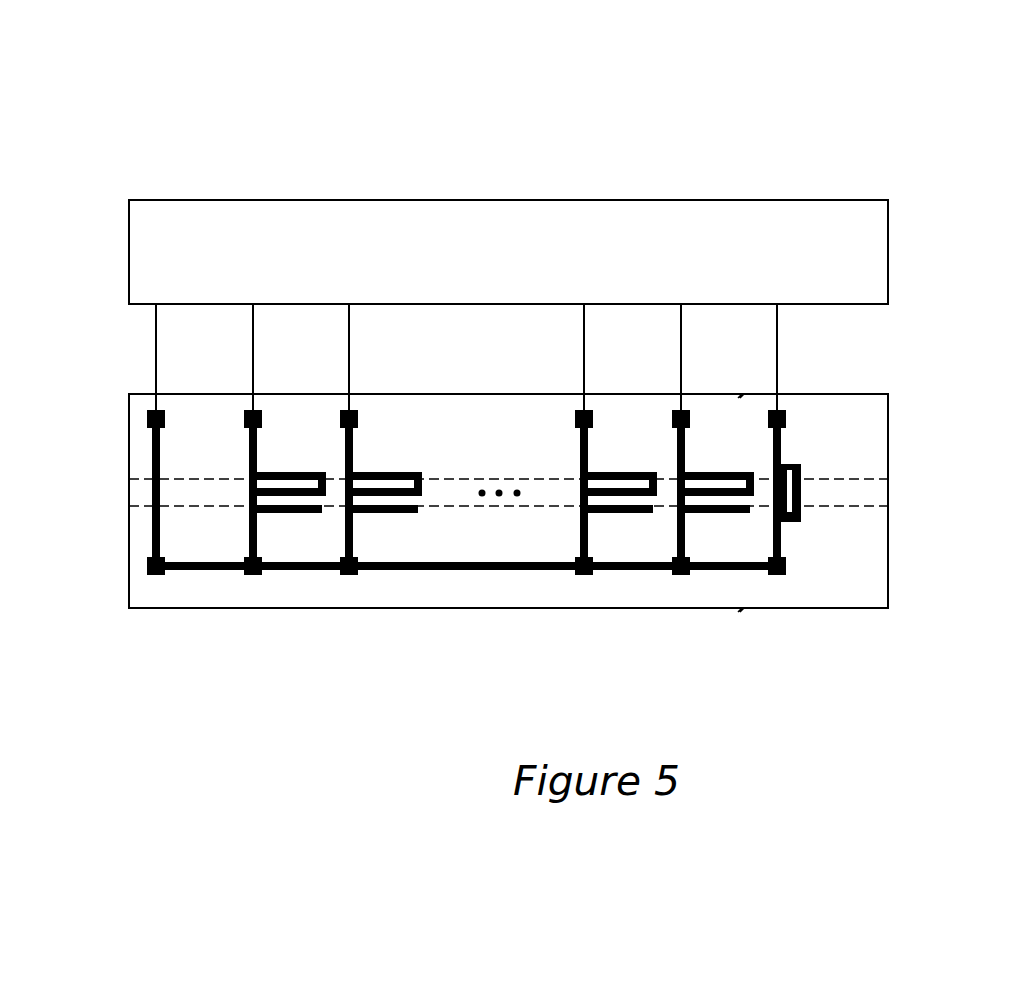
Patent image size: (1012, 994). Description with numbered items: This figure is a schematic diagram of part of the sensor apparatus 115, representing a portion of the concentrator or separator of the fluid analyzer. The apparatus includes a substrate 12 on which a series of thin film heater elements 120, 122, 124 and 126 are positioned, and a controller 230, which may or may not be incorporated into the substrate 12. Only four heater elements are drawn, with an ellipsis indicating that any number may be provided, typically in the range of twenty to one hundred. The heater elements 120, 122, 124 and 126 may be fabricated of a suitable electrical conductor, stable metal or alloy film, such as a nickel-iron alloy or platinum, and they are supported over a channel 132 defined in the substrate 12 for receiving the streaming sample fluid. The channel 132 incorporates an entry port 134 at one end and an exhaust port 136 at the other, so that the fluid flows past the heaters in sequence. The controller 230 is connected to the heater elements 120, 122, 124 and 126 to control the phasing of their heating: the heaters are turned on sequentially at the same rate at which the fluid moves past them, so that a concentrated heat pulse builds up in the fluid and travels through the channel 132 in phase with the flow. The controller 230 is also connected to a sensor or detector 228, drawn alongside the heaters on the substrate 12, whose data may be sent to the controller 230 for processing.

The sensor apparatus 115 is at (903, 155).
The controller 230 is at (817, 200).
The substrate 12 is at (888, 402).
The entry port 134 is at (147, 488).
The heater element 120 is at (312, 513).
The heater element 122 is at (408, 513).
The channel 132 is at (508, 507).
The heater element 124 is at (640, 513).
The heater element 126 is at (737, 513).
The sensor or detector 228 is at (803, 468).
The exhaust port 136 is at (853, 500).